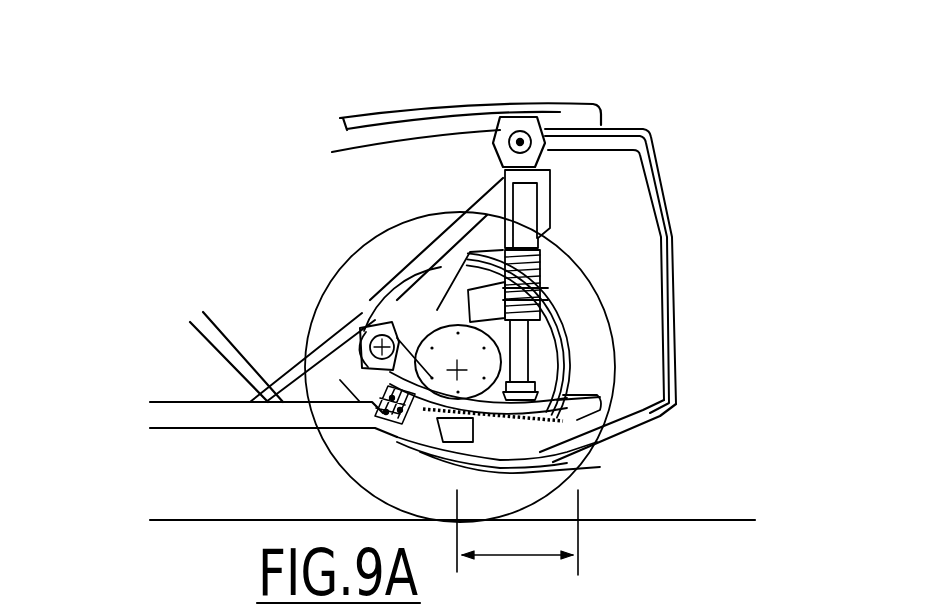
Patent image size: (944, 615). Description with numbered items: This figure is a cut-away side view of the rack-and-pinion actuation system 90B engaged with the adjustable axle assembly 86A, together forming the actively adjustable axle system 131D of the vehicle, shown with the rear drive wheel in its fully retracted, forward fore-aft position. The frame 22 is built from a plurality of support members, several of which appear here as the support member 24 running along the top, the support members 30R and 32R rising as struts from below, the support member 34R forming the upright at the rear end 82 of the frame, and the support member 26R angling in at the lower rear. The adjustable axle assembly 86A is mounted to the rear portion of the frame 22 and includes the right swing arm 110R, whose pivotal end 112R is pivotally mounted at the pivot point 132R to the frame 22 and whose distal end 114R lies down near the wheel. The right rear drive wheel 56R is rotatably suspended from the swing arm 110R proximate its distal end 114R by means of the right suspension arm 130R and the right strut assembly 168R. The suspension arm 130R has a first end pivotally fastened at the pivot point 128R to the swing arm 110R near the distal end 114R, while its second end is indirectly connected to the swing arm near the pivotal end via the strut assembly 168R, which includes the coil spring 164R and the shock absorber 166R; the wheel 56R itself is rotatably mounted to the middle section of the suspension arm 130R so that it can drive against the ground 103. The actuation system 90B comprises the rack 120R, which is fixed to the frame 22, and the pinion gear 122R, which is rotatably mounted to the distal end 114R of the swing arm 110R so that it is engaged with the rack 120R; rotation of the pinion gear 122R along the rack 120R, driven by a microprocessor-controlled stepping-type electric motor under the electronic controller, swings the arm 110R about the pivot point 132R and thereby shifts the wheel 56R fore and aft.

The frame 22 is at (392, 110).
The support member 24 is at (346, 128).
The support member 26R is at (655, 410).
The support member 30R is at (218, 333).
The support member 32R is at (377, 312).
The support member 34R is at (652, 137).
The right rear drive wheel 56R is at (333, 440).
The rear end 82 is at (716, 191).
The adjustable axle assembly 86A is at (208, 213).
The actuation system 90B is at (345, 383).
The ground 103 is at (186, 520).
The right swing arm 110R is at (477, 250).
The right pivotal end 112R is at (503, 161).
The right distal end 114R is at (337, 437).
The right rack 120R is at (580, 462).
The right pinion gear 122R is at (373, 497).
The right pivot point 128R is at (367, 313).
The right suspension arm 130R is at (583, 452).
The actively adjustable axle system 131D is at (718, 62).
The right pivot point 132R is at (522, 140).
The right coil spring 164R is at (540, 263).
The right shock absorber 166R is at (520, 337).
The right strut assembly 168R is at (552, 297).